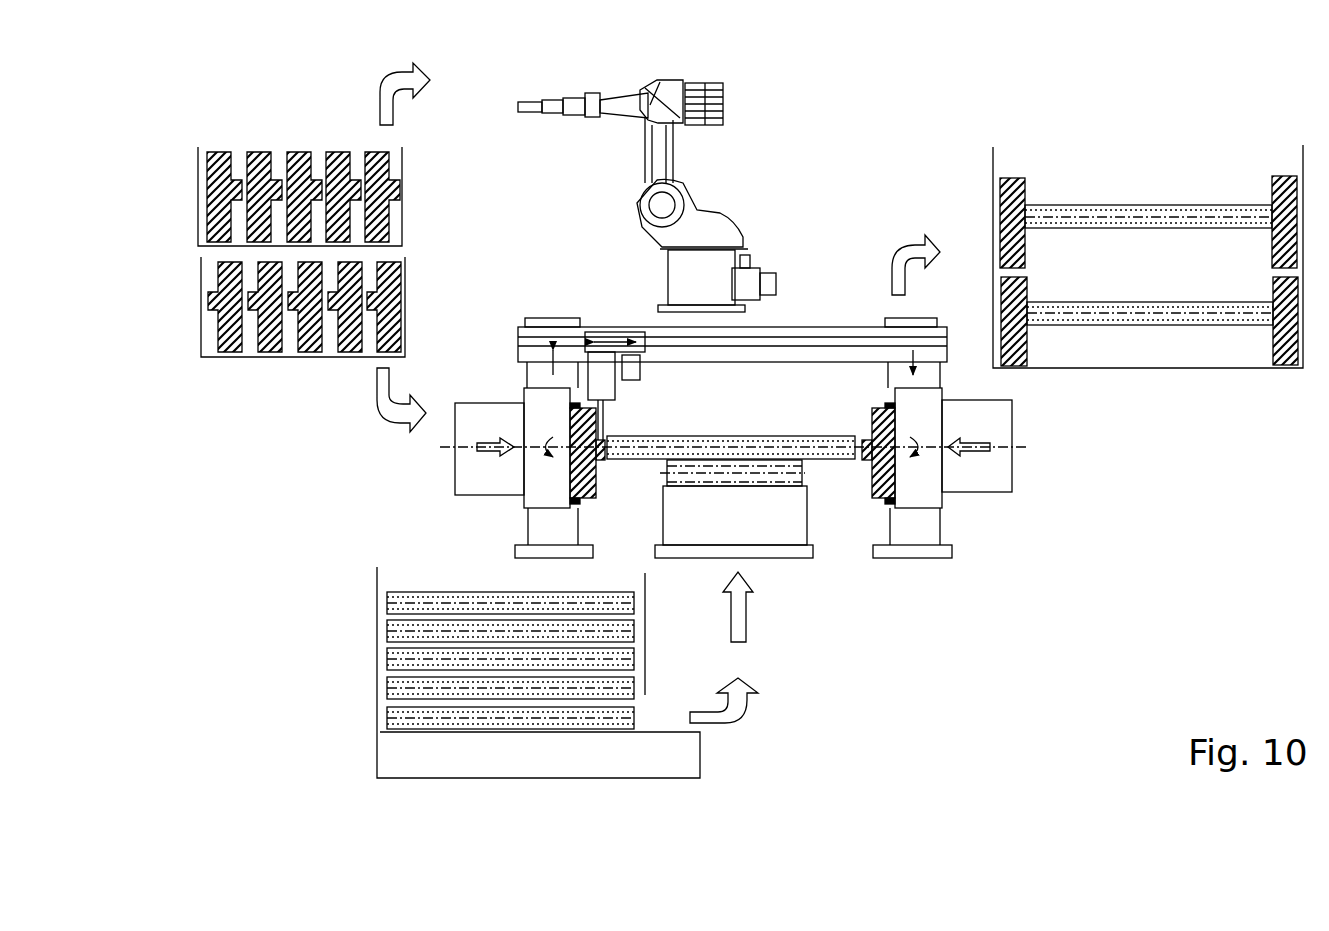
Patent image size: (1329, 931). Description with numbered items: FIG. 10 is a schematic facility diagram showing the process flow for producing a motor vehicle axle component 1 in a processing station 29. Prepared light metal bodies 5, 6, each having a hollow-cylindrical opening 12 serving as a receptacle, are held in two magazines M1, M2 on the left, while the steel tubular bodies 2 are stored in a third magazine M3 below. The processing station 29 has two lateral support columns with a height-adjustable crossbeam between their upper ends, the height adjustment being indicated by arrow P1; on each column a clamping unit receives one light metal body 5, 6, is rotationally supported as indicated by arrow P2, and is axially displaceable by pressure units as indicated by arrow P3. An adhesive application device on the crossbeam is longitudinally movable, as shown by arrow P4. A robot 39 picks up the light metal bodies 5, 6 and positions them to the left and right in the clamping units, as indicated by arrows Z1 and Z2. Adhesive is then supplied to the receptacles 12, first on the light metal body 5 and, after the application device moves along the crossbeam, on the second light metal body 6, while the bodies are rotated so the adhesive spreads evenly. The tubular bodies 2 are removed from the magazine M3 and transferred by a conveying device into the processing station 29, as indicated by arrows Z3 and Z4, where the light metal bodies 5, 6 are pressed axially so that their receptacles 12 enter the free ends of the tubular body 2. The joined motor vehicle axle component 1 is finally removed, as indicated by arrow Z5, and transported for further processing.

The motor vehicle axle component 1 is at (1211, 189).
The tubular body 2 is at (785, 436).
The light metal body 5 is at (258, 150).
The light metal body 6 is at (226, 357).
The hollow-cylindrical opening 12 is at (600, 462).
The processing station 29 is at (852, 230).
The robot 39 is at (720, 184).
The magazine M1 is at (197, 204).
The magazine M2 is at (200, 339).
The magazine M3 is at (377, 667).
The arrow indicating height adjustment of the crossbeam P1 is at (723, 367).
The arrow indicating rotation of the clamping unit P2 is at (548, 458).
The arrow indicating axial displacement P3 is at (495, 441).
The arrow indicating movability of the adhesive application device P4 is at (613, 332).
The arrow indicating positioning of light metal bodies Z1 is at (401, 407).
The arrow indicating positioning of light metal bodies Z2 is at (412, 87).
The arrow indicating transfer of tubular bodies Z3 is at (729, 707).
The arrow indicating transfer of tubular bodies Z4 is at (749, 607).
The arrow indicating removal of the axle component Z5 is at (921, 259).